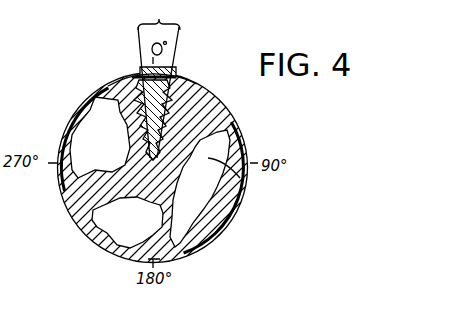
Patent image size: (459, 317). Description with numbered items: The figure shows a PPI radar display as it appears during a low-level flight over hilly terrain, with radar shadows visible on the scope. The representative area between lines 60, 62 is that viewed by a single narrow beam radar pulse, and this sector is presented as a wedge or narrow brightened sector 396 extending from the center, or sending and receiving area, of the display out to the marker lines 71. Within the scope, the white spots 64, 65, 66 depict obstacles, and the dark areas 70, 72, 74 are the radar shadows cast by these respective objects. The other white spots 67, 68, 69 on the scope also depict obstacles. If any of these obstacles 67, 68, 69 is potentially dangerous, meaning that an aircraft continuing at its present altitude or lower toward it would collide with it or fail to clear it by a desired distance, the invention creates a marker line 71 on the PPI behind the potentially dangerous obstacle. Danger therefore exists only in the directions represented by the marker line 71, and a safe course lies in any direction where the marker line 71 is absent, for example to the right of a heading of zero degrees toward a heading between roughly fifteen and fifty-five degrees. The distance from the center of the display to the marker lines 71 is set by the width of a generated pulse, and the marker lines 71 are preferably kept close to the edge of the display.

The brightened sector 396 is at (159, 81).
The line 60 is at (138, 52).
The line 62 is at (178, 55).
The white spot 64 is at (145, 140).
The white spot 65 is at (168, 110).
The white spot 66 is at (186, 80).
The white spot 67 is at (59, 184).
The white spot 68 is at (94, 232).
The white spot 69 is at (241, 199).
The dark area 70 is at (128, 82).
The marker line 71 is at (137, 73).
The dark area 72 is at (140, 85).
The dark area 74 is at (176, 73).